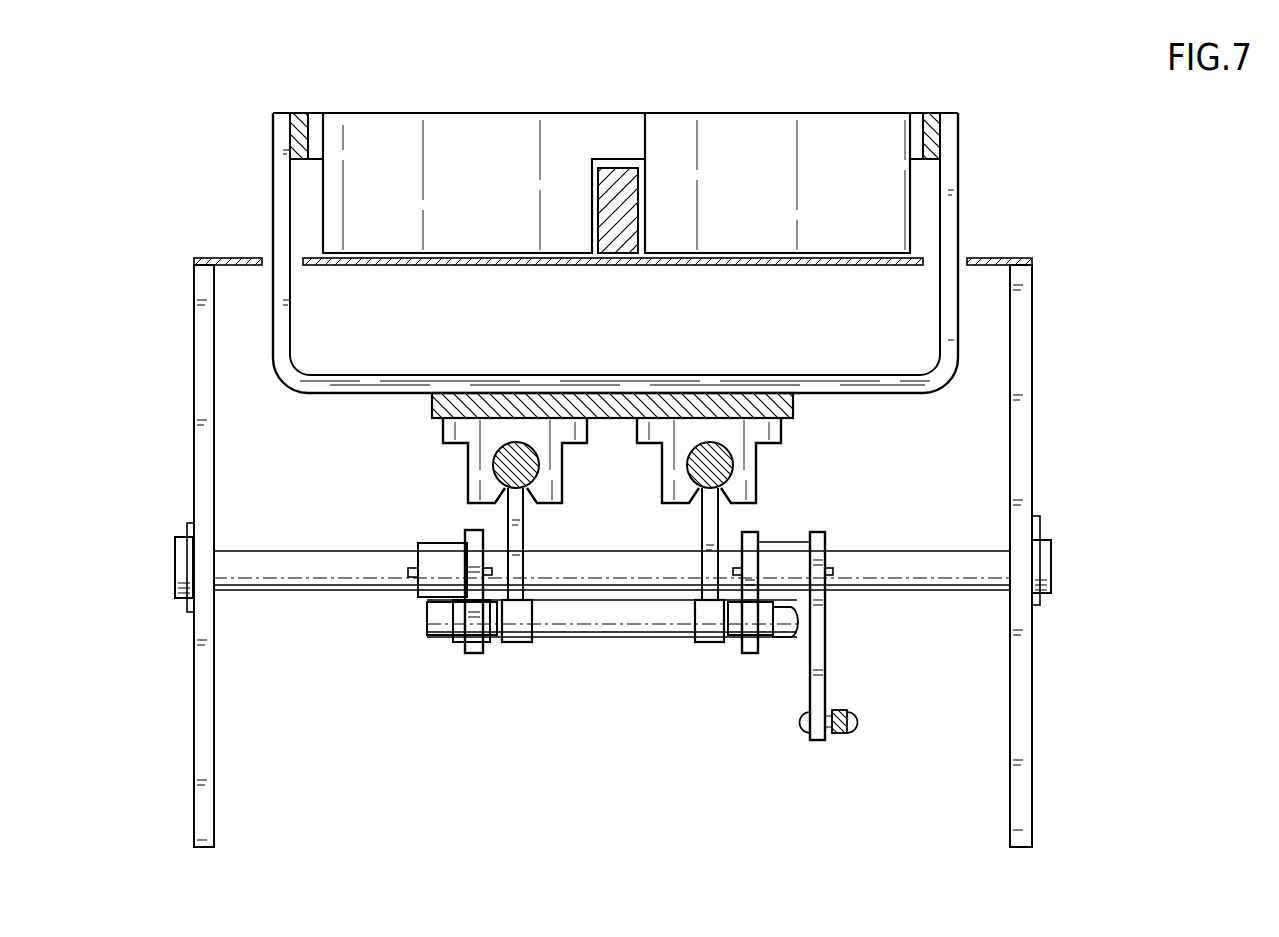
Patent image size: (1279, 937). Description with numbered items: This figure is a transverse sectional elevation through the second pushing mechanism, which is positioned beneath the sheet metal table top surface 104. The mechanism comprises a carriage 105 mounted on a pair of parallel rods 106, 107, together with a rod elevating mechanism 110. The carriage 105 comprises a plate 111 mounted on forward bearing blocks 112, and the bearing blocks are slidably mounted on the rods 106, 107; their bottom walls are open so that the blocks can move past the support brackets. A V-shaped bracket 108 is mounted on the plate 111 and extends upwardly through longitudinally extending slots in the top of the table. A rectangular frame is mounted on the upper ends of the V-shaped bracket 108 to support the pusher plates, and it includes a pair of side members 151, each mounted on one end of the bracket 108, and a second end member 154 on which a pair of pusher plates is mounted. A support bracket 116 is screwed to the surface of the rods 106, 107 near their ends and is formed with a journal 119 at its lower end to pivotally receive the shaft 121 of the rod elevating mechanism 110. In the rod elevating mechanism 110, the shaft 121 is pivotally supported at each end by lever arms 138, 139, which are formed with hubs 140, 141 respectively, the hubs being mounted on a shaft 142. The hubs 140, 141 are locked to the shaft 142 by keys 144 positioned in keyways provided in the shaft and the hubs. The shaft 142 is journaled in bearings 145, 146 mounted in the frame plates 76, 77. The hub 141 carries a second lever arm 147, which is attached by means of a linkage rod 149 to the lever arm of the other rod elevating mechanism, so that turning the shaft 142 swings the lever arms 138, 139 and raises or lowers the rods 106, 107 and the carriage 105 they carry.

The frame plate 76 is at (208, 695).
The frame plate 77 is at (1027, 800).
The sheet metal table top surface 104 is at (711, 266).
The carriage 105 is at (800, 411).
The rod 106 is at (512, 459).
The rod 107 is at (703, 463).
The V-shaped bracket 108 is at (292, 382).
The rod elevating mechanism 110 is at (268, 253).
The plate 111 is at (610, 400).
The forward bearing block 112 is at (481, 453).
The support bracket 116 is at (503, 517).
The journal 119 is at (518, 643).
The shaft 121 is at (596, 633).
The lever arm 138 is at (475, 587).
The lever arm 139 is at (748, 598).
The hub 140 is at (425, 590).
The hub 141 is at (783, 562).
The shaft 142 is at (290, 558).
The key 144 is at (491, 569).
The bearing 145 is at (180, 560).
The bearing 146 is at (1052, 562).
The second lever arm 147 is at (818, 689).
The linkage rod 149 is at (841, 733).
The side member 151 is at (307, 113).
The second end member 154 is at (621, 128).